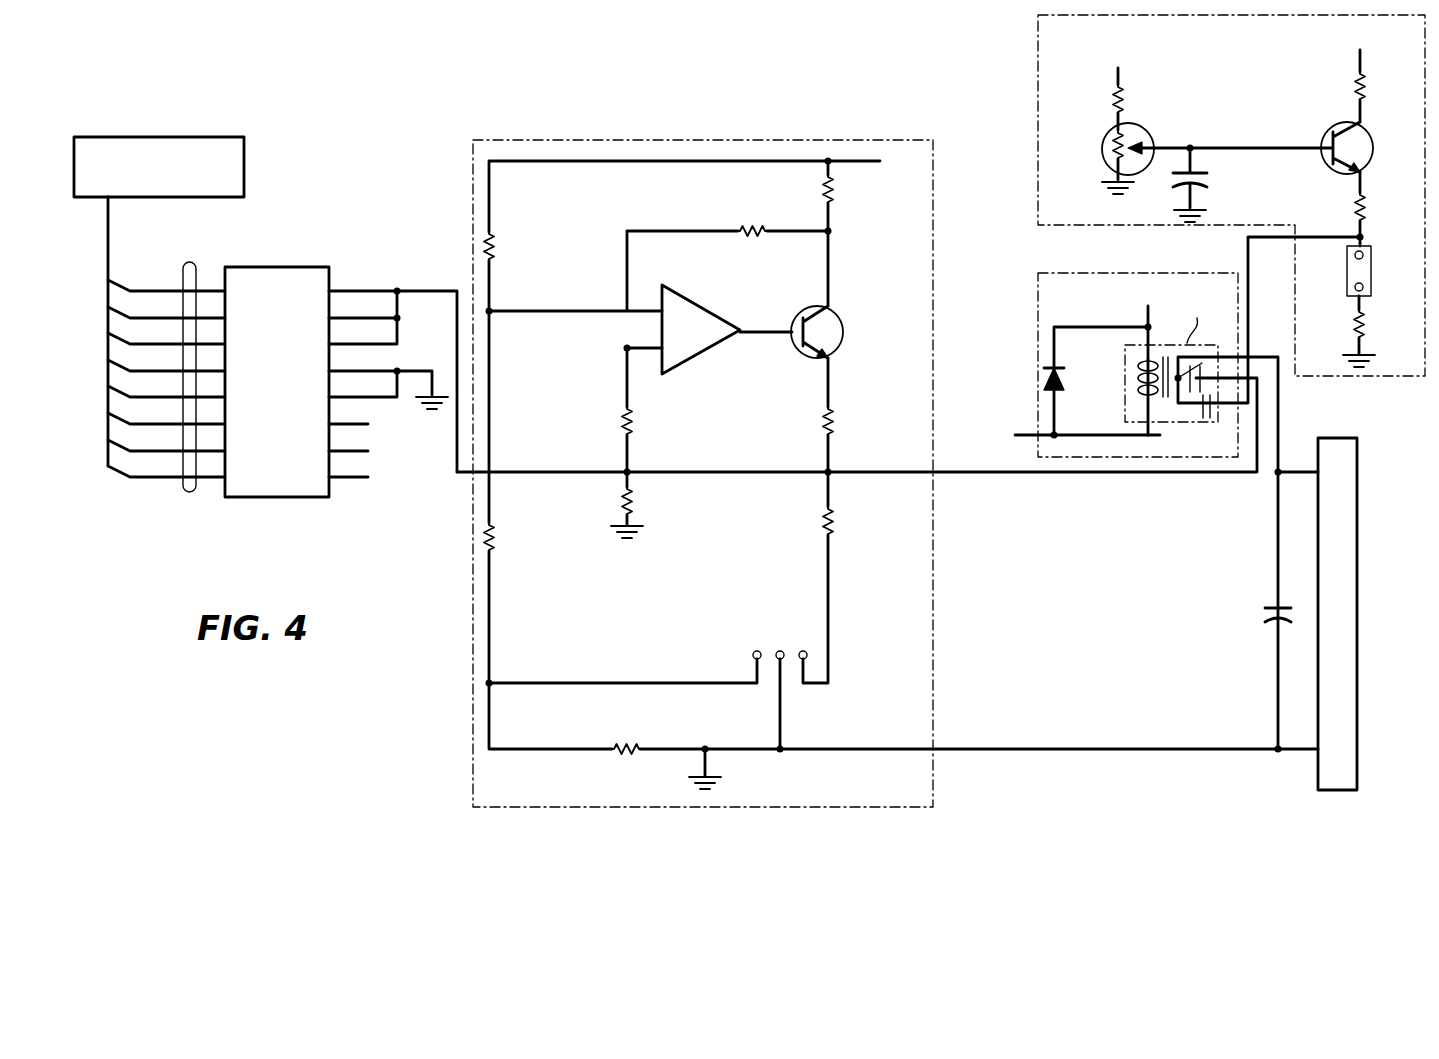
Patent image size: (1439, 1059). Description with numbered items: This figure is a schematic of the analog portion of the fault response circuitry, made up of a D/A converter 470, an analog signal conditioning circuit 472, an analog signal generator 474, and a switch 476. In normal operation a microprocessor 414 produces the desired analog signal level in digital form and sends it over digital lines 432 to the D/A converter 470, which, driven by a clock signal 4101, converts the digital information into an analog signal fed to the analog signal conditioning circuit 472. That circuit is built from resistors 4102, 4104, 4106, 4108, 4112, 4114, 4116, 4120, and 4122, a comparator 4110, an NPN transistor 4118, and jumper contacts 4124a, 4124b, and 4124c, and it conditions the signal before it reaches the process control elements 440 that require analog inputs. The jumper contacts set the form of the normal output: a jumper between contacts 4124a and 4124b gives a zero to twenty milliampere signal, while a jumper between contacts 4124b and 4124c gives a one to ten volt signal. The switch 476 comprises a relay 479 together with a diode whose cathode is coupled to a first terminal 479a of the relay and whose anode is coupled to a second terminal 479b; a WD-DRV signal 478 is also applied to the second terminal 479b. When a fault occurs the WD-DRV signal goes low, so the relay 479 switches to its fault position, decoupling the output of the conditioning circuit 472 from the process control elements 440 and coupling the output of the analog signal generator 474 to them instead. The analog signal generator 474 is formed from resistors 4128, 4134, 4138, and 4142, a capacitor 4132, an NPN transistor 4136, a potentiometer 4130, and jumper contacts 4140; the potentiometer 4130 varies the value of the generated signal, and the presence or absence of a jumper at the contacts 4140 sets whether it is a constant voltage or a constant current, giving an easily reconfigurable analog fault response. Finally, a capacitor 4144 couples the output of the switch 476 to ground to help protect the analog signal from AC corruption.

The microprocessor 414 is at (150, 137).
The digital lines 432 is at (189, 262).
The D/A converter 470 is at (315, 267).
The clock signal 4101 is at (390, 467).
The analog signal conditioning circuit 472 is at (565, 140).
The resistor 4102 is at (490, 258).
The resistor 4104 is at (500, 560).
The resistor 4106 is at (613, 753).
The resistor 4108 is at (742, 227).
The comparator 4110 is at (713, 347).
The resistor 4112 is at (620, 427).
The resistor 4114 is at (620, 510).
The resistor 4116 is at (833, 195).
The NPN transistor 4118 is at (800, 310).
The resistor 4120 is at (817, 422).
The resistor 4122 is at (817, 520).
The jumper contact 4124a is at (753, 655).
The jumper contact 4124b is at (777, 650).
The jumper contact 4124c is at (802, 650).
The analog signal generator 474 is at (1038, 70).
The resistor 4128 is at (1115, 103).
The potentiometer 4130 is at (1108, 160).
The capacitor 4132 is at (1180, 185).
The resistor 4134 is at (1355, 82).
The NPN transistor 4136 is at (1322, 130).
The resistor 4138 is at (1353, 210).
The jumper contacts 4140 is at (1346, 288).
The resistor 4142 is at (1353, 317).
The capacitor 4144 is at (1268, 600).
The switch 476 is at (1038, 312).
The WD-DRV signal 478 is at (1030, 435).
The relay 479 is at (1125, 357).
The first terminal of the relay 479a is at (1148, 310).
The second terminal of the relay 479b is at (1160, 427).
The process control elements 440 is at (1318, 770).